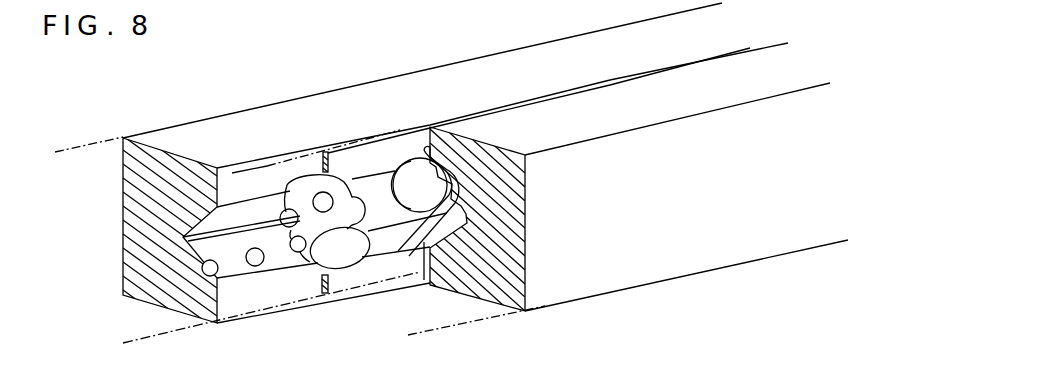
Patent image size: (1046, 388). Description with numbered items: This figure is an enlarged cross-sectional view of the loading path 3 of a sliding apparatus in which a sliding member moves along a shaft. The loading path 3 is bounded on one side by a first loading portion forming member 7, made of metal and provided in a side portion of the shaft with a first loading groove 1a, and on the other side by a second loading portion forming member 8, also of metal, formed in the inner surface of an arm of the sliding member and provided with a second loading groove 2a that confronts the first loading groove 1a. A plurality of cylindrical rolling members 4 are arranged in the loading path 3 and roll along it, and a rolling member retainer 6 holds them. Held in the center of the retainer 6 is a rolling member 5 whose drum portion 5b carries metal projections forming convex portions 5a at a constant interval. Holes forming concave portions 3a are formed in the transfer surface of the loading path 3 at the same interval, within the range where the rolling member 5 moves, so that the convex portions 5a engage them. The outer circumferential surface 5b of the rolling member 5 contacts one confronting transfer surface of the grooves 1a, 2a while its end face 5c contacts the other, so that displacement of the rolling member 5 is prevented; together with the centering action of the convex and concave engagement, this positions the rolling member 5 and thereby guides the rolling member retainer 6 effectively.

The first loading groove 1a is at (232, 268).
The second loading groove 2a is at (423, 150).
The loading path 3 is at (186, 240).
The concave portion 3a is at (203, 273).
The rolling member 4 is at (414, 248).
The rolling member 5 is at (314, 266).
The convex portion 5a is at (291, 214).
The drum portion 5b is at (321, 185).
The end face 5c is at (338, 256).
The rolling member retainer 6 is at (377, 162).
The first loading portion forming member 7 is at (132, 173).
The second loading portion forming member 8 is at (508, 273).